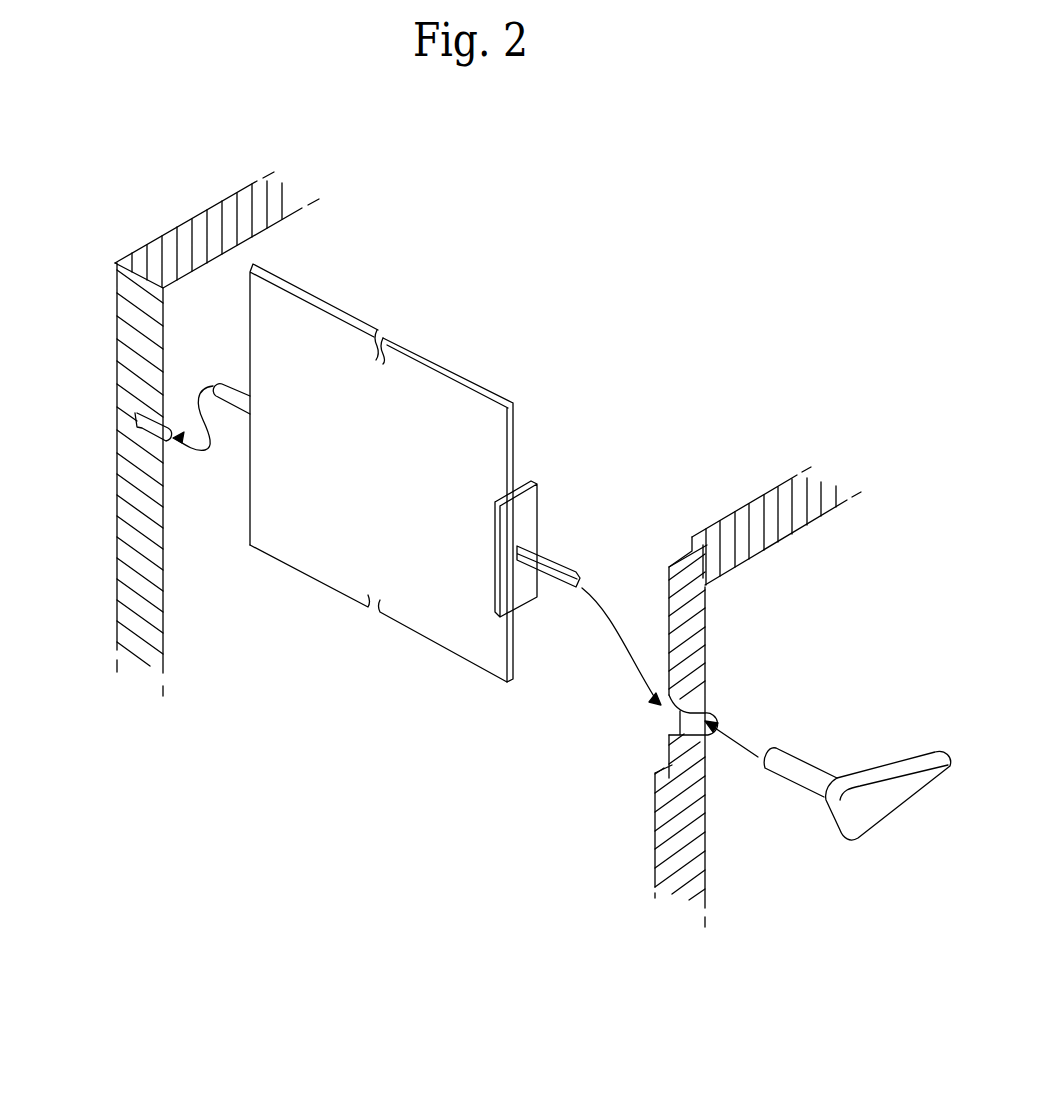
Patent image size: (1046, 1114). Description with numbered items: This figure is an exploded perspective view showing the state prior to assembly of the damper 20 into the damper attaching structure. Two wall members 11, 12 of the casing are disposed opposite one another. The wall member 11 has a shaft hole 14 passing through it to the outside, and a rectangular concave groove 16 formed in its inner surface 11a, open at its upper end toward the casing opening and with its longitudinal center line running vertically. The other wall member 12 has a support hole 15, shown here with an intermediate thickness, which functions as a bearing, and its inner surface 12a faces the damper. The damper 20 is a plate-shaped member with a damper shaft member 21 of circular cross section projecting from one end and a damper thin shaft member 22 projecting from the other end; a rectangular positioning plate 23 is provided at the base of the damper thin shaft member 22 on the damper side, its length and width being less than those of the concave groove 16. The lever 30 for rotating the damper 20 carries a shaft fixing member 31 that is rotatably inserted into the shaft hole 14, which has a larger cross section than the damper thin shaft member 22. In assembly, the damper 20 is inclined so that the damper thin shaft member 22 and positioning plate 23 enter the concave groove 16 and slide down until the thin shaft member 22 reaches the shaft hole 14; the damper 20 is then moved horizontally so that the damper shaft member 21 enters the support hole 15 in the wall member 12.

The wall member 11 is at (797, 520).
The inner surface 11a is at (756, 498).
The wall member 12 is at (187, 238).
The inner surface 12a is at (187, 307).
The shaft hole 14 is at (710, 718).
The support hole 15 is at (148, 425).
The concave groove 16 is at (675, 557).
The damper 20 is at (463, 378).
The damper shaft member 21 is at (233, 388).
The damper thin shaft member 22 is at (562, 563).
The positioning plate 23 is at (533, 500).
The lever 30 is at (923, 750).
The shaft fixing member 31 is at (787, 783).